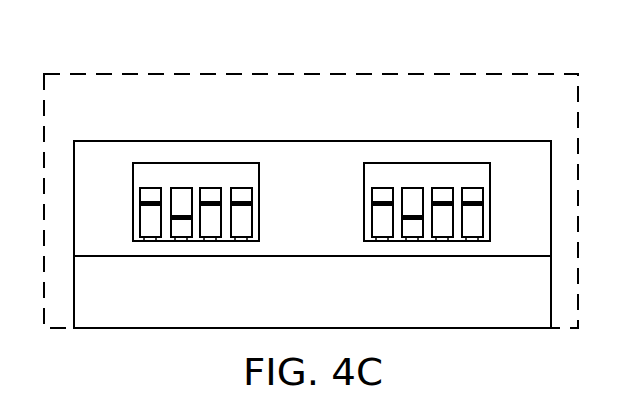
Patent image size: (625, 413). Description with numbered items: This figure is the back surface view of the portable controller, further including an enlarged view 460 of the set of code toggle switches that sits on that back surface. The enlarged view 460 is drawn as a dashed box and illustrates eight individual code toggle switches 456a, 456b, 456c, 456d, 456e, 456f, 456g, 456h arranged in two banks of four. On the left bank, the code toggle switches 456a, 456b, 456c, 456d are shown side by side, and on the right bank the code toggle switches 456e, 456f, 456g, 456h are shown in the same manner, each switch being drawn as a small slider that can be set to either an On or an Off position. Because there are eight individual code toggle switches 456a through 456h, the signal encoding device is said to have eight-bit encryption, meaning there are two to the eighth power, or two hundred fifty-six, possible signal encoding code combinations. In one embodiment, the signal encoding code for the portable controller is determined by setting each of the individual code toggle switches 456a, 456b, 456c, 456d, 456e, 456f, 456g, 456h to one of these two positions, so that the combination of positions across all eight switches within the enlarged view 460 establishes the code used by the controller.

The enlarged view 460 is at (149, 70).
The code toggle switch 456a is at (150, 188).
The code toggle switch 456b is at (181, 241).
The code toggle switch 456c is at (210, 188).
The code toggle switch 456d is at (242, 241).
The code toggle switch 456e is at (382, 188).
The code toggle switch 456f is at (412, 241).
The code toggle switch 456g is at (442, 188).
The code toggle switch 456h is at (472, 241).